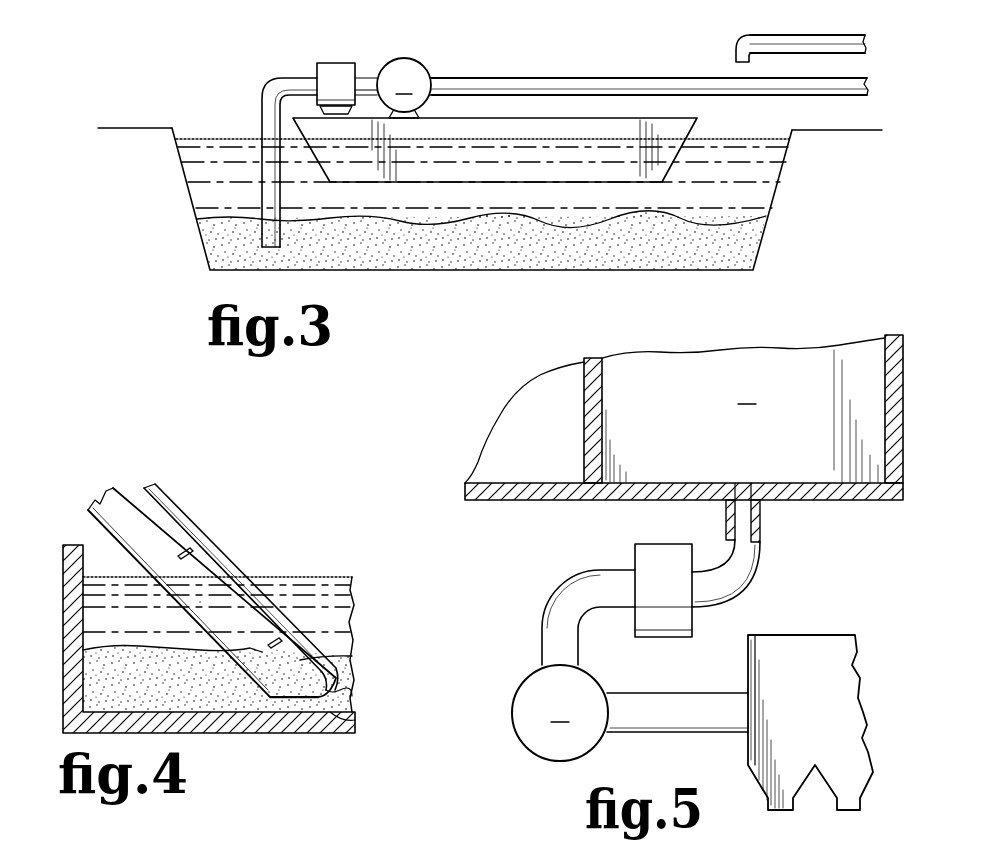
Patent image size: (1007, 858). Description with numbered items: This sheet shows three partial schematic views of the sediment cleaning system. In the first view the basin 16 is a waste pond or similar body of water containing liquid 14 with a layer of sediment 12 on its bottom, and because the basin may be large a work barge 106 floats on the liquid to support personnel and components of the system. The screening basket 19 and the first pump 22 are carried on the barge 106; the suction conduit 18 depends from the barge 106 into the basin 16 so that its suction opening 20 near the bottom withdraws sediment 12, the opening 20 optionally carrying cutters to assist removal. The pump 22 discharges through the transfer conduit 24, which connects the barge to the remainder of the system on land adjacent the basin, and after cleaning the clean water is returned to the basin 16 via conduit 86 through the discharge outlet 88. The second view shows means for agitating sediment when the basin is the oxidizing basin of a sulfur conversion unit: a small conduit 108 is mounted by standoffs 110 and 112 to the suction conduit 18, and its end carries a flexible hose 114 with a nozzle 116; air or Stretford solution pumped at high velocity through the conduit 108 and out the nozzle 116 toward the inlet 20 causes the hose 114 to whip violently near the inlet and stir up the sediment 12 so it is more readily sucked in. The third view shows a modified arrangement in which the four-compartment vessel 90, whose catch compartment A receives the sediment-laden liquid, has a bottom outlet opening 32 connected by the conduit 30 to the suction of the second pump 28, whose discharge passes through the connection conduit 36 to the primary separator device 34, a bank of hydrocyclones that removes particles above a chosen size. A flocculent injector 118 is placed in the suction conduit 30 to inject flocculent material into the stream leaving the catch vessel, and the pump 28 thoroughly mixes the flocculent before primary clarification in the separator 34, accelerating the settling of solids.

In FIG. 3, the sediment 12 is at (598, 252).
In FIG. 4, the sediment 12 is at (213, 697).
In FIG. 3, the liquid 14 is at (483, 173).
In FIG. 4, the liquid 14 is at (340, 602).
In FIG. 3, the basin 16 is at (775, 205).
In FIG. 4, the basin 16 is at (63, 658).
In FIG. 3, the suction conduit 18 is at (267, 197).
In FIG. 4, the suction conduit 18 is at (200, 602).
In FIG. 3, the screening basket 19 is at (328, 78).
In FIG. 3, the suction opening 20 is at (270, 257).
In FIG. 4, the suction opening 20 is at (312, 703).
In FIG. 3, the first pump 22 is at (404, 58).
In FIG. 3, the transfer conduit 24 is at (568, 85).
In FIG. 5, the second pump 28 is at (518, 700).
In FIG. 5, the conduit 30 is at (745, 590).
In FIG. 5, the bottom outlet opening 32 is at (746, 483).
In FIG. 5, the primary separator device 34 is at (815, 635).
In FIG. 5, the connection conduit 36 is at (716, 734).
In FIG. 3, the conduit 86 is at (798, 37).
In FIG. 3, the discharge outlet 88 is at (736, 60).
In FIG. 3, the four-compartment vessel 90 is at (814, 347).
In FIG. 5, the four-compartment vessel 90 is at (684, 417).
In FIG. 3, the work barge 106 is at (500, 182).
In FIG. 4, the small conduit 108 is at (218, 547).
In FIG. 4, the standoff 110 is at (177, 537).
In FIG. 4, the standoff 112 is at (270, 627).
In FIG. 4, the flexible hose 114 is at (353, 692).
In FIG. 4, the nozzle 116 is at (355, 718).
In FIG. 5, the flocculent injector 118 is at (653, 544).